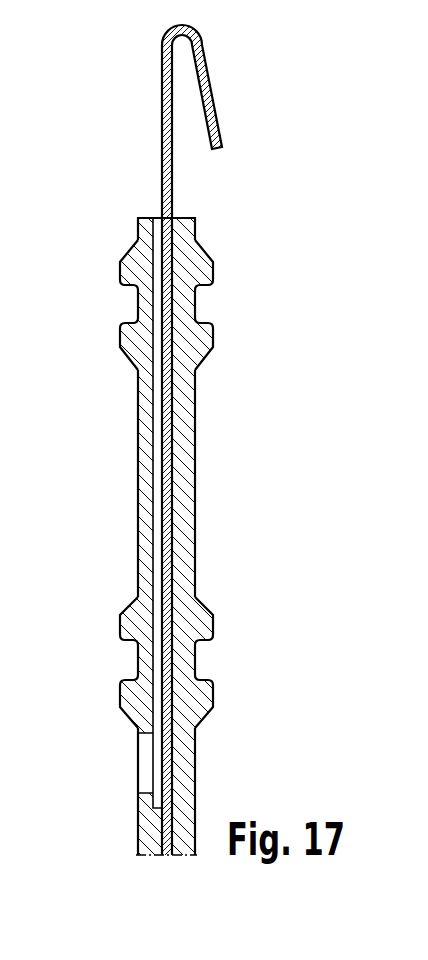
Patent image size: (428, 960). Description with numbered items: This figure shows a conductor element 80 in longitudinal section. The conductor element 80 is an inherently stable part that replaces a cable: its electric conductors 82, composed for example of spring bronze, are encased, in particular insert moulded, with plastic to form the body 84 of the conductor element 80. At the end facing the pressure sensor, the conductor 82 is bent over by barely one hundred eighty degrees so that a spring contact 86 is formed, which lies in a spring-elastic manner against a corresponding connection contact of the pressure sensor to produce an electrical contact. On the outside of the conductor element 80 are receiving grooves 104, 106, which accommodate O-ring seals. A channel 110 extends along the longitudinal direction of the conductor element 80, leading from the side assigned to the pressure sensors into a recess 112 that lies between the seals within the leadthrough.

The conductor element 80 is at (112, 82).
The conductor 82 is at (165, 485).
The carrier body 84 is at (143, 525).
The spring contact 86 is at (210, 81).
The receiving groove 104 is at (130, 662).
The receiving groove 106 is at (128, 306).
The channel 110 is at (155, 435).
The recess 112 is at (145, 765).